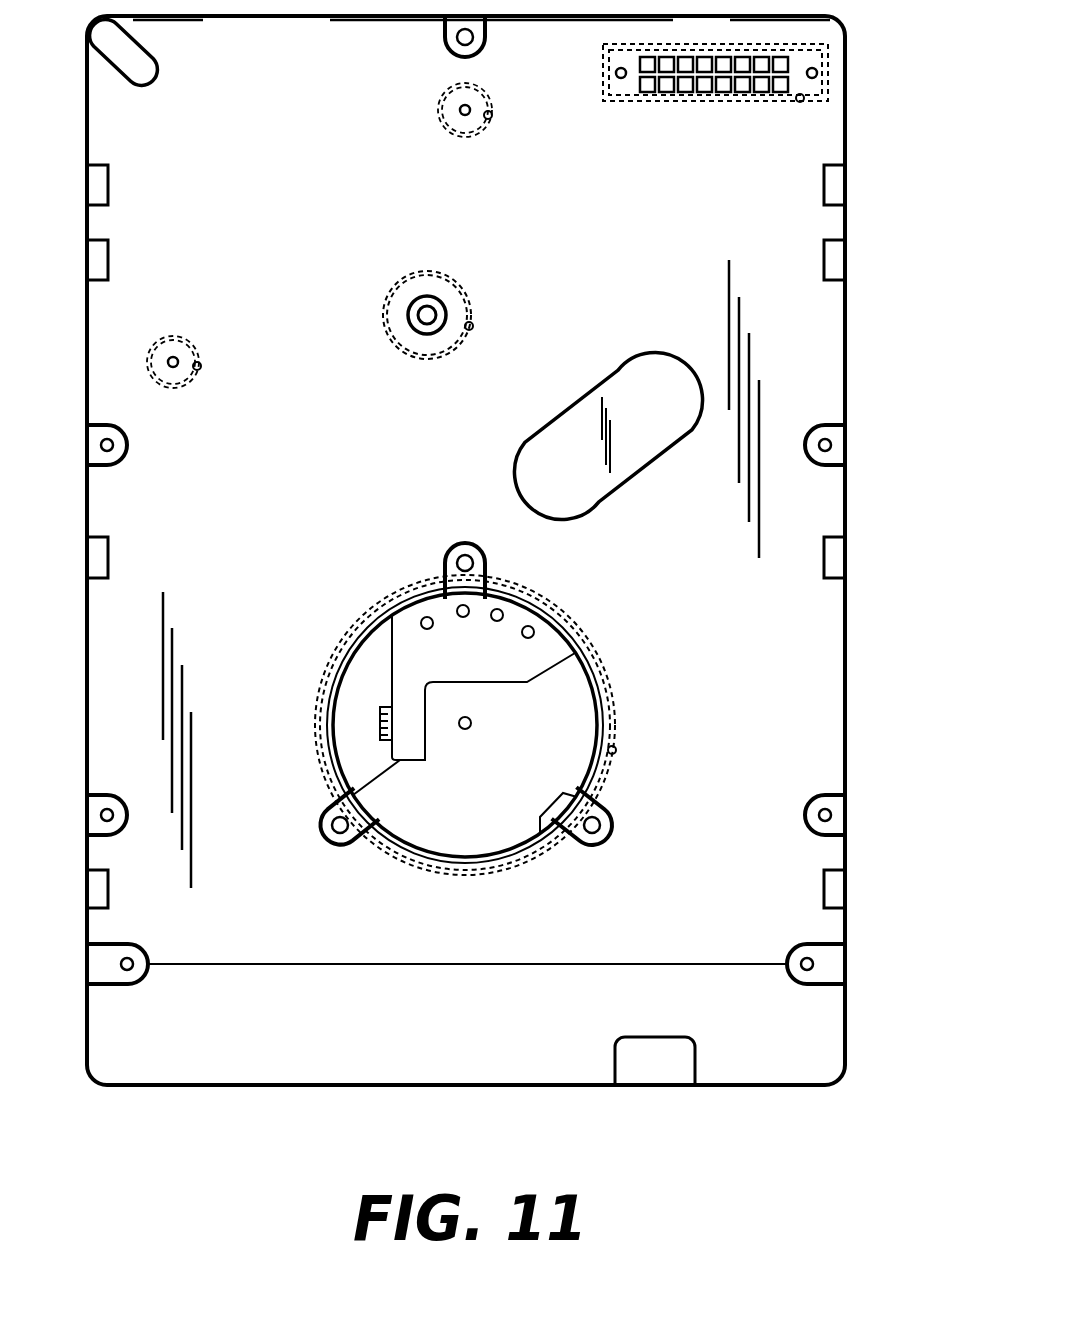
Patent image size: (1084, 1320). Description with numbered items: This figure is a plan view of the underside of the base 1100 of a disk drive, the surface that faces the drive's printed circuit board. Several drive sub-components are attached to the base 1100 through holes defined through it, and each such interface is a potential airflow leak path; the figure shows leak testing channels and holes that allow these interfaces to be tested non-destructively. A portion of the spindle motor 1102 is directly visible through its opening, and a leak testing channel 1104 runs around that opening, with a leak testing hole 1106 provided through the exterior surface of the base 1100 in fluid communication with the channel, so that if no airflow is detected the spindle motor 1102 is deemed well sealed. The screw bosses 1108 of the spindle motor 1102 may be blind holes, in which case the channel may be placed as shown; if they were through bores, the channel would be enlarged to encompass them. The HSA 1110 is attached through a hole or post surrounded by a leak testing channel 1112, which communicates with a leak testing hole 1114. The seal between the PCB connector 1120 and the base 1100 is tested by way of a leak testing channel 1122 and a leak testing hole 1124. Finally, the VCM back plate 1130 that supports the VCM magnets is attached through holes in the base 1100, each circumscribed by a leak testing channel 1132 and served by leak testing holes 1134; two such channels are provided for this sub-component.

The base 1100 is at (145, 1085).
The spindle motor 1102 is at (557, 735).
The leak testing channel 1104 is at (597, 788).
The leak testing hole 1106 is at (616, 752).
The screw bosses 1108 is at (487, 560).
The HSA 1110 is at (437, 300).
The leak testing channel 1112 is at (440, 357).
The leak testing hole 1114 is at (475, 327).
The PCB connector 1120 is at (788, 82).
The leak testing channel 1122 is at (640, 100).
The leak testing hole 1124 is at (800, 103).
The VCM back plate 1130 is at (465, 118).
The leak testing channel 1132 is at (440, 105).
The leak testing holes 1134 is at (492, 120).